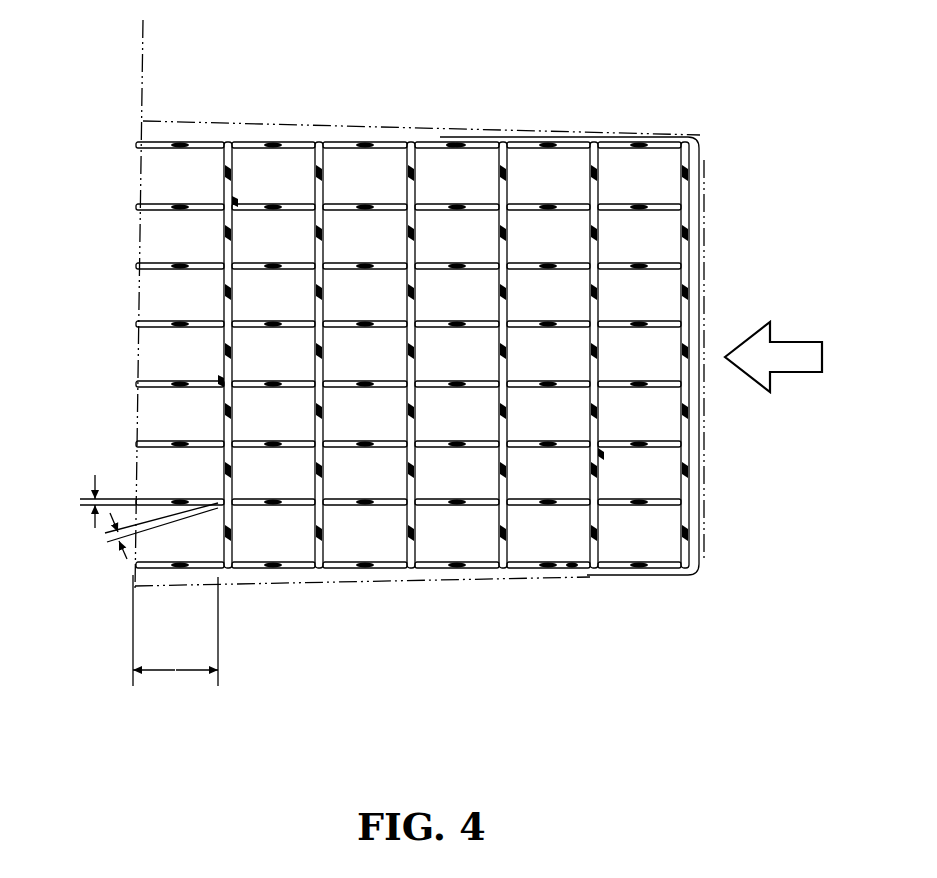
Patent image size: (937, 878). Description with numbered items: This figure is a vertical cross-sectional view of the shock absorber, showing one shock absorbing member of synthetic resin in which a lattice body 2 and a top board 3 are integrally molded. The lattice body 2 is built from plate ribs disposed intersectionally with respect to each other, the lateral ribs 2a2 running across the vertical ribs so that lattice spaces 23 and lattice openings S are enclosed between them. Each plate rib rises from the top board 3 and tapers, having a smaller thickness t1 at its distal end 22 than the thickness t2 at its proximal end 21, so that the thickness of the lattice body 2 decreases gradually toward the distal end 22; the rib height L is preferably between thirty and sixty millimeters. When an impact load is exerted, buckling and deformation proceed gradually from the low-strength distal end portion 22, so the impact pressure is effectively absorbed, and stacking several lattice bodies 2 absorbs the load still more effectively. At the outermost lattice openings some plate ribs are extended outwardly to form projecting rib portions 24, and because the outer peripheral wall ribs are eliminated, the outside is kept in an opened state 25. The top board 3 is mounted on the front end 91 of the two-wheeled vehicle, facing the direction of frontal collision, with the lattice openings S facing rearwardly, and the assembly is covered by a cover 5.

The lattice body 2 is at (445, 366).
The top board 3 is at (323, 183).
The cover 5 is at (704, 520).
The proximal end 21 is at (218, 378).
The distal end 22 is at (237, 200).
The lattice space 23 is at (470, 250).
The projecting rib portion 24 is at (540, 142).
The opened state 25 is at (452, 142).
The lateral rib 2a2 is at (642, 205).
The front end 91 is at (143, 52).
The lattice opening S is at (137, 313).
The thickness at the distal end t1 is at (79, 501).
The thickness at the proximal end t2 is at (150, 533).
The height L is at (175, 630).